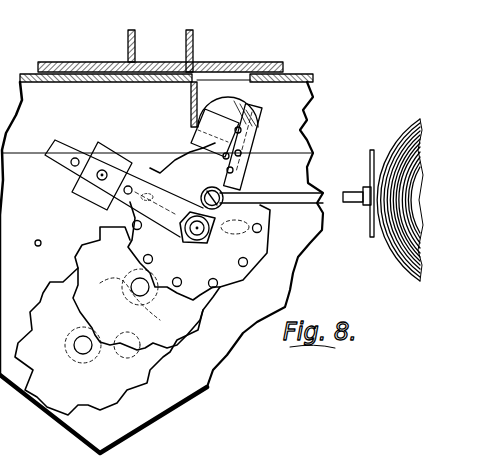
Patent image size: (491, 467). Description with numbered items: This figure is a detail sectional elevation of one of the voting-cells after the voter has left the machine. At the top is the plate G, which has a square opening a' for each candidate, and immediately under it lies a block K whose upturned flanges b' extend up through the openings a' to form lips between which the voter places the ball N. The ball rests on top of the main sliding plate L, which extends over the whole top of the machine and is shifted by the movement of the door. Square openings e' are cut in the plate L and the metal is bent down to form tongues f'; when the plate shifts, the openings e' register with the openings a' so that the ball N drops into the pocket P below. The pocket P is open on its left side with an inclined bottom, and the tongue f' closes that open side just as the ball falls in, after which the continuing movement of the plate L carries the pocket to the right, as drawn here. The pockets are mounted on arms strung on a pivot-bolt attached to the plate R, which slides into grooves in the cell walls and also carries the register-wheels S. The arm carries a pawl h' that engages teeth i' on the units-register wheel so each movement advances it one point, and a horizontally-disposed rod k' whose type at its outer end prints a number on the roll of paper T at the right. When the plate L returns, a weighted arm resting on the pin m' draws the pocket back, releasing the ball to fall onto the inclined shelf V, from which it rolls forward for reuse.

The block K is at (223, 70).
The plate G is at (250, 69).
The openings a' is at (148, 46).
The upturned flanges b' is at (203, 77).
The sliding plate L is at (65, 83).
The tongues f' is at (171, 102).
The openings e' is at (228, 105).
The ball N is at (240, 108).
The pocket P is at (207, 128).
The plate R is at (116, 188).
The inclined shelf V is at (90, 190).
The pin m' is at (54, 246).
The pawl g is at (223, 188).
The pawl h' is at (262, 185).
The rod k' is at (283, 186).
The teeth i' is at (305, 218).
The register-wheels S is at (142, 279).
The roll of paper T is at (402, 147).